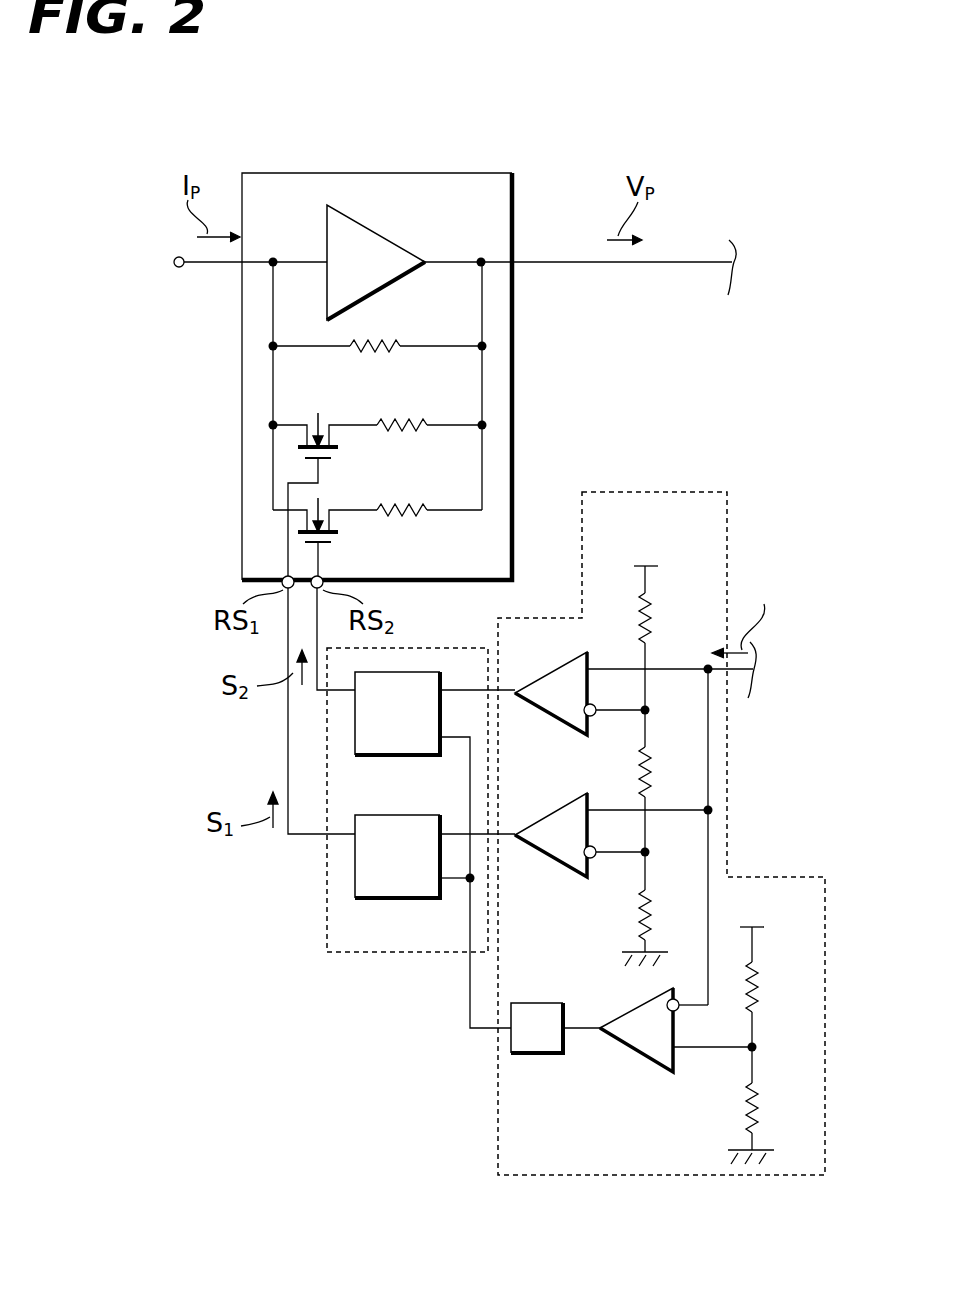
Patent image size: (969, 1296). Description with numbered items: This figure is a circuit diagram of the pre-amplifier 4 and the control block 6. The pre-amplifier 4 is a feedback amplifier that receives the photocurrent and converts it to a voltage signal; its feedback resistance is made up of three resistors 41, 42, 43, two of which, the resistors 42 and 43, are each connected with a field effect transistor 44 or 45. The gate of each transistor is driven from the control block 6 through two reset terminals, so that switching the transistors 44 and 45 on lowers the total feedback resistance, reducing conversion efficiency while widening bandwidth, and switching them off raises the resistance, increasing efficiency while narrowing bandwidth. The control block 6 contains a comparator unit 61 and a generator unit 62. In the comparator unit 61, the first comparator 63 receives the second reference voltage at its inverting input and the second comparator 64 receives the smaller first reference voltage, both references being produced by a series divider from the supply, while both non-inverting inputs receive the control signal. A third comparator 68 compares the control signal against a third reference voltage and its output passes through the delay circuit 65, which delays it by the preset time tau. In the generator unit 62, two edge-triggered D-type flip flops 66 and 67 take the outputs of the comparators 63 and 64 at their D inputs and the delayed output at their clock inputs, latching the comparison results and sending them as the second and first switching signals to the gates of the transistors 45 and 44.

The pre-amplifier 4 is at (442, 173).
The control block 6 is at (708, 421).
The resistor 41 is at (354, 351).
The resistor 42 is at (421, 431).
The resistor 43 is at (421, 516).
The field effect transistor 44 is at (330, 461).
The field effect transistor 45 is at (330, 546).
The comparator unit 61 is at (582, 1178).
The generator unit 62 is at (383, 955).
The first comparator 63 is at (558, 726).
The second comparator 64 is at (558, 868).
The delay circuit 65 is at (535, 1055).
The first D-type flip flop 66 is at (400, 757).
The second D-type flip flop 67 is at (400, 900).
The third comparator 68 is at (643, 1058).